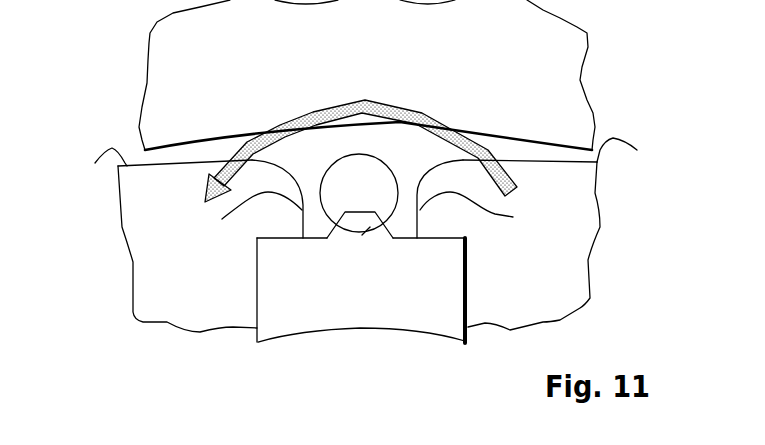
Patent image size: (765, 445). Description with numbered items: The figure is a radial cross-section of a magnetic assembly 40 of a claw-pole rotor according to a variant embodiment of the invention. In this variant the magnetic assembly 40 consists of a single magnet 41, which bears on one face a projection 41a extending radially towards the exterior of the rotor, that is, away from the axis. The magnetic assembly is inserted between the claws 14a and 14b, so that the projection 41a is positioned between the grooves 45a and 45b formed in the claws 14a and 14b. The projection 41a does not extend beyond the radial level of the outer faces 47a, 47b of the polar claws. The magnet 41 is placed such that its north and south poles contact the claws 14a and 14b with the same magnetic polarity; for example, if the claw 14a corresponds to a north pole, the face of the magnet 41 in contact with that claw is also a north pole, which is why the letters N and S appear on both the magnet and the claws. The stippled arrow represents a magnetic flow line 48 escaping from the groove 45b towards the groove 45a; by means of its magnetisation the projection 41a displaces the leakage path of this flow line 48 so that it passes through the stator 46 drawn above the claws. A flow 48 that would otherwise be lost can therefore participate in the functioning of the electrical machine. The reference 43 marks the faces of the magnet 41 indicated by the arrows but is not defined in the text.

The claw 14a is at (157, 295).
The claw 14b is at (553, 291).
The magnetic assembly 40 is at (357, 350).
The magnet 41 is at (417, 305).
The projection 41a is at (353, 222).
The magnet pole faces 43 is at (281, 239).
The groove 45a is at (222, 219).
The groove 45b is at (513, 217).
The stator 46 is at (182, 53).
The outer face 47a is at (95, 163).
The outer face 47b is at (637, 150).
The magnetic flow line 48 is at (365, 100).